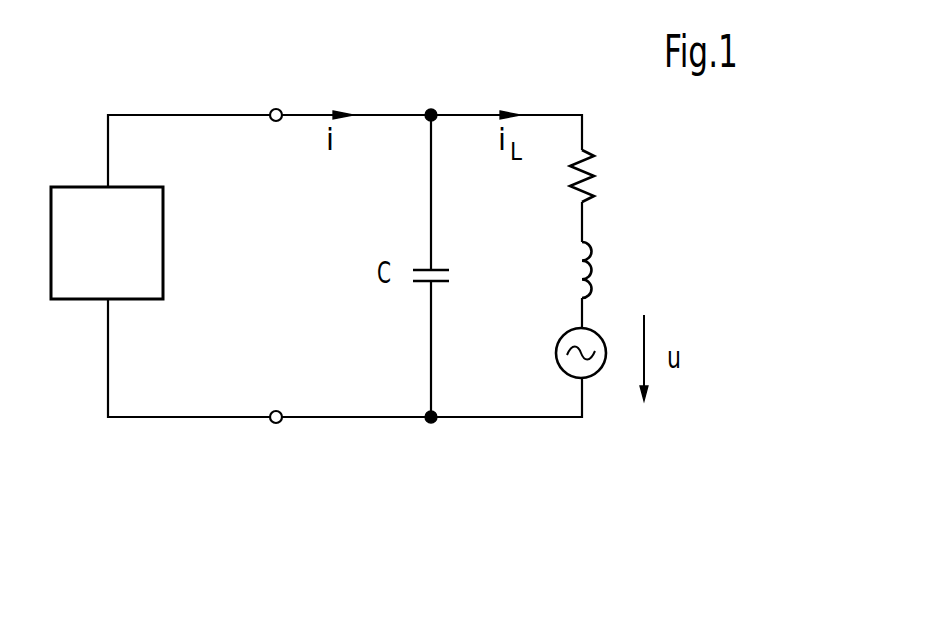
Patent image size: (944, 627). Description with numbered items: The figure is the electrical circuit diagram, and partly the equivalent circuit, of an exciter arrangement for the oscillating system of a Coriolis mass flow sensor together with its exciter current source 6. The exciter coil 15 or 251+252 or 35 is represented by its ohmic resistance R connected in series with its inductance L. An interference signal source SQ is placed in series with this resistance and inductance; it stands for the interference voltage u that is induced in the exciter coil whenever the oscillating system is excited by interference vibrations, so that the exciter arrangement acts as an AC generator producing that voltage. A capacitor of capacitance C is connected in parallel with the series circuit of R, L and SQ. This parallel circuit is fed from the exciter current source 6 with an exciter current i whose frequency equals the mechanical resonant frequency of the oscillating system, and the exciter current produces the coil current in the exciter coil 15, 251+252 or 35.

The exciter current source 6 is at (68, 300).
The exciter coil 15 is at (637, 308).
The exciter coil 251 is at (652, 264).
The exciter coil 252 is at (652, 264).
The exciter coil 35 is at (613, 264).